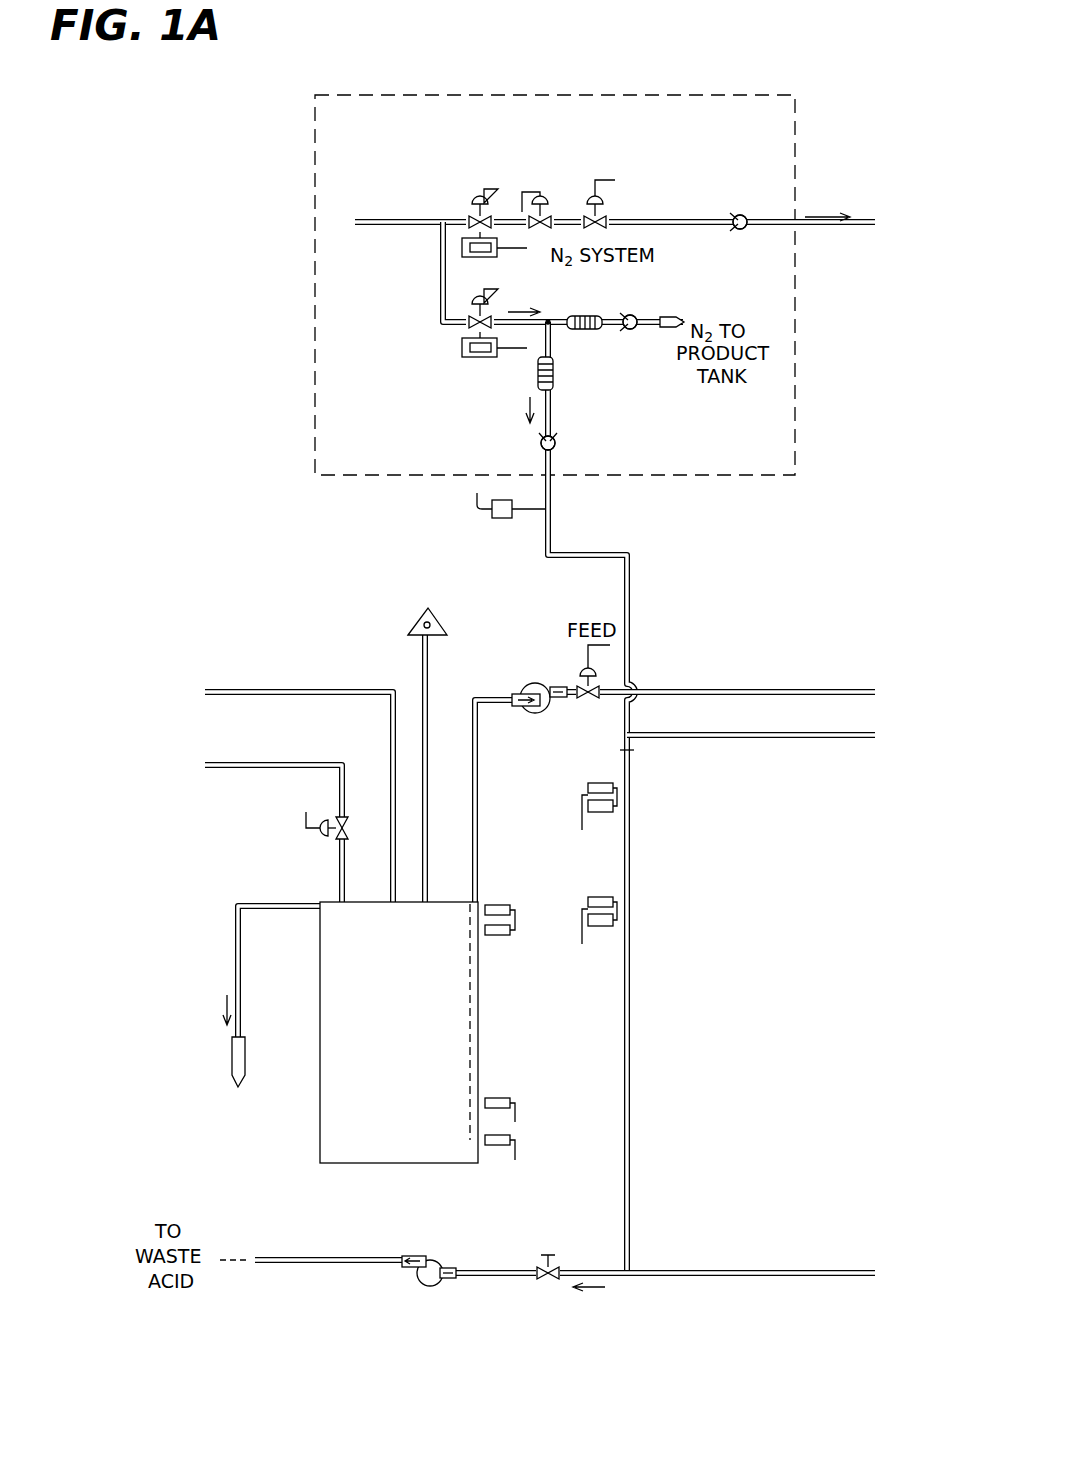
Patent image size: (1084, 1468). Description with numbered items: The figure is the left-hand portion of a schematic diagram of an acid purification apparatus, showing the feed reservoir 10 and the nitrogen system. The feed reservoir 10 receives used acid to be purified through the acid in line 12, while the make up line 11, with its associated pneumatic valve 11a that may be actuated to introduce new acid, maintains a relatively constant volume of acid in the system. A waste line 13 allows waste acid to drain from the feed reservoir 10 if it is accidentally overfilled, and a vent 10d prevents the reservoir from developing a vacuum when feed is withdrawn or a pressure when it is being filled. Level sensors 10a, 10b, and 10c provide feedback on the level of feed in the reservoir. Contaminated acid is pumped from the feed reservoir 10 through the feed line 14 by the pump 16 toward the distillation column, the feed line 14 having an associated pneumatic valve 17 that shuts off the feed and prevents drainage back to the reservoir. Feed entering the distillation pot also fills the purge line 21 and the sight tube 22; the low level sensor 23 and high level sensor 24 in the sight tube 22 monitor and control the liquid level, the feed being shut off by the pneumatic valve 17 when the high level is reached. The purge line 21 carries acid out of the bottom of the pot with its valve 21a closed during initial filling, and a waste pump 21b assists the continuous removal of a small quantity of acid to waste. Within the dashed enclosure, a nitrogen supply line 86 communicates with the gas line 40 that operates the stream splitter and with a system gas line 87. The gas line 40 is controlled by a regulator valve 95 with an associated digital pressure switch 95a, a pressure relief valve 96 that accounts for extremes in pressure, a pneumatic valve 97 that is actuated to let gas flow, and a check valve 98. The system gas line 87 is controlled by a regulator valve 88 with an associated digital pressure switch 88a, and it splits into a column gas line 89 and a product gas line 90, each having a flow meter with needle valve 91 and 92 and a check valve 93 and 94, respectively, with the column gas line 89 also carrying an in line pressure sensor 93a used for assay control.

The feed reservoir 10 is at (414, 1026).
The level sensor 10a is at (497, 1150).
The level sensor 10b is at (496, 1096).
The level sensor 10c is at (498, 902).
The vent 10d is at (437, 616).
The make up line 11 is at (272, 770).
The pneumatic valve 11a is at (336, 830).
The acid in line 12 is at (275, 690).
The waste line 13 is at (235, 976).
The feed line 14 is at (431, 706).
The pump 16 is at (530, 690).
The pneumatic valve 17 is at (596, 706).
The purge line 21 is at (754, 1271).
The valve 21a is at (546, 1286).
The waste pump 21b is at (433, 1259).
The sight tube 22 is at (633, 1094).
The low level sensor 23 is at (599, 897).
The high level sensor 24 is at (599, 787).
The gas line 40 is at (838, 232).
The nitrogen supply line 86 is at (388, 220).
The system gas line 87 is at (441, 276).
The regulator valve 88 is at (470, 318).
The digital pressure switch 88a is at (460, 351).
The column gas line 89 is at (553, 352).
The product gas line 90 is at (549, 320).
The flow meter with needle valve 91 is at (553, 378).
The flow meter with needle valve 92 is at (585, 316).
The check valve 93 is at (555, 445).
The in line pressure sensor 93a is at (517, 514).
The check valve 94 is at (644, 318).
The regulator valve 95 is at (477, 218).
The digital pressure switch 95a is at (460, 248).
The pressure relief valve 96 is at (548, 212).
The pneumatic valve 97 is at (592, 214).
The check valve 98 is at (747, 215).